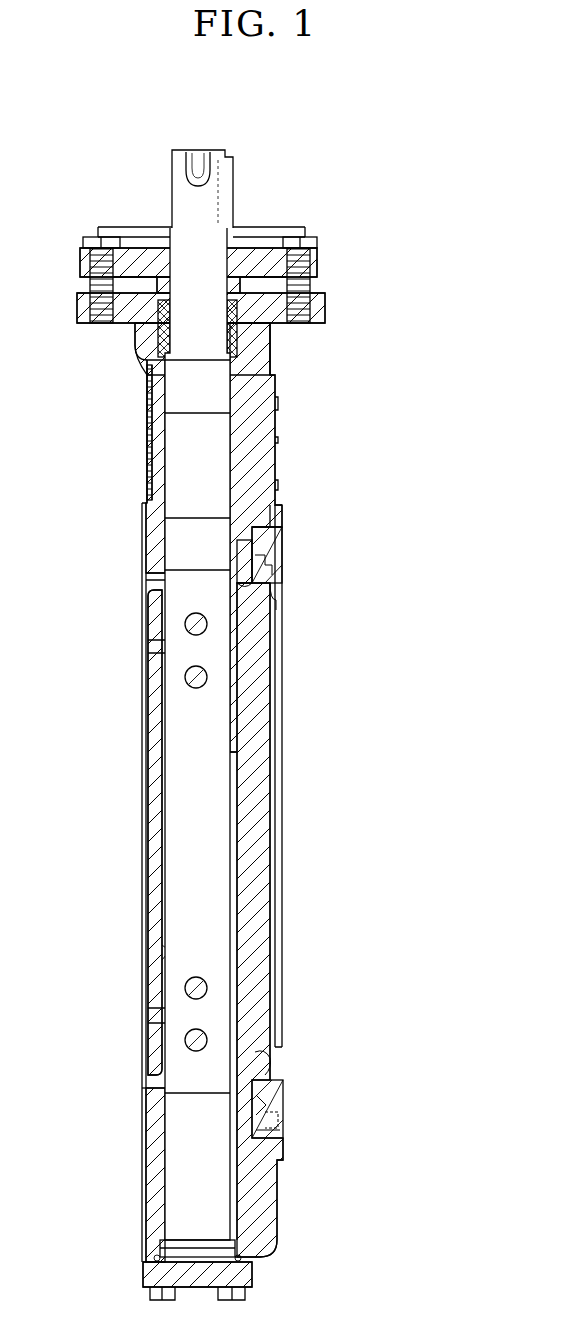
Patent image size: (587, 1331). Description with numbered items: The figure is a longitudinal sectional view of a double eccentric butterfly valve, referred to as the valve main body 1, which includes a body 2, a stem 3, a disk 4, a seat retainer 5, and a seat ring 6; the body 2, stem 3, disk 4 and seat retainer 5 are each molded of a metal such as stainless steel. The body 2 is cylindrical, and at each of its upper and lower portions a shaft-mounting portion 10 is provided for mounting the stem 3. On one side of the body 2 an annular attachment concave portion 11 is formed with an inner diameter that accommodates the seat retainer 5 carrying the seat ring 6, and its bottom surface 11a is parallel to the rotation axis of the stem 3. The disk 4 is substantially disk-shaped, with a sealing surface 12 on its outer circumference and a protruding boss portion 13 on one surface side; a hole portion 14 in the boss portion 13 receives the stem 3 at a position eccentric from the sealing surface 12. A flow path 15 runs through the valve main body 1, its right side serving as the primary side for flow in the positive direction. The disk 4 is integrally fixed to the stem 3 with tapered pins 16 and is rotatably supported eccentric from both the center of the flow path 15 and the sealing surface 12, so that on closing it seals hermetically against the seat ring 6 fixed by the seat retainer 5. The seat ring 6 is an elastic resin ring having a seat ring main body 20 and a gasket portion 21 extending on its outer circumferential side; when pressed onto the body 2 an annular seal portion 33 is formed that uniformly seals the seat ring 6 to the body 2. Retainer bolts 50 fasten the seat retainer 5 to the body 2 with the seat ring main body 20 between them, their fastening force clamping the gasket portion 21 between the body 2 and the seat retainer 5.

The valve main body 1 is at (265, 180).
The body 2 is at (262, 510).
The stem 3 is at (190, 383).
The disk 4 is at (258, 790).
The seat retainer 5 is at (265, 565).
The seat ring 6 is at (265, 1082).
The shaft-mounting portion 10 is at (147, 462).
The attachment concave portion 11 is at (268, 543).
The bottom surface 11a is at (278, 1137).
The sealing surface 12 is at (282, 1047).
The boss portion 13 is at (150, 707).
The hole portion 14 is at (162, 958).
The flow path 15 is at (145, 1082).
The tapered pins 16 is at (185, 677).
The seat ring main body 20 is at (272, 605).
The gasket portion 21 is at (272, 1105).
The seal portion 33 is at (250, 547).
The retainer bolts 50 is at (285, 1118).